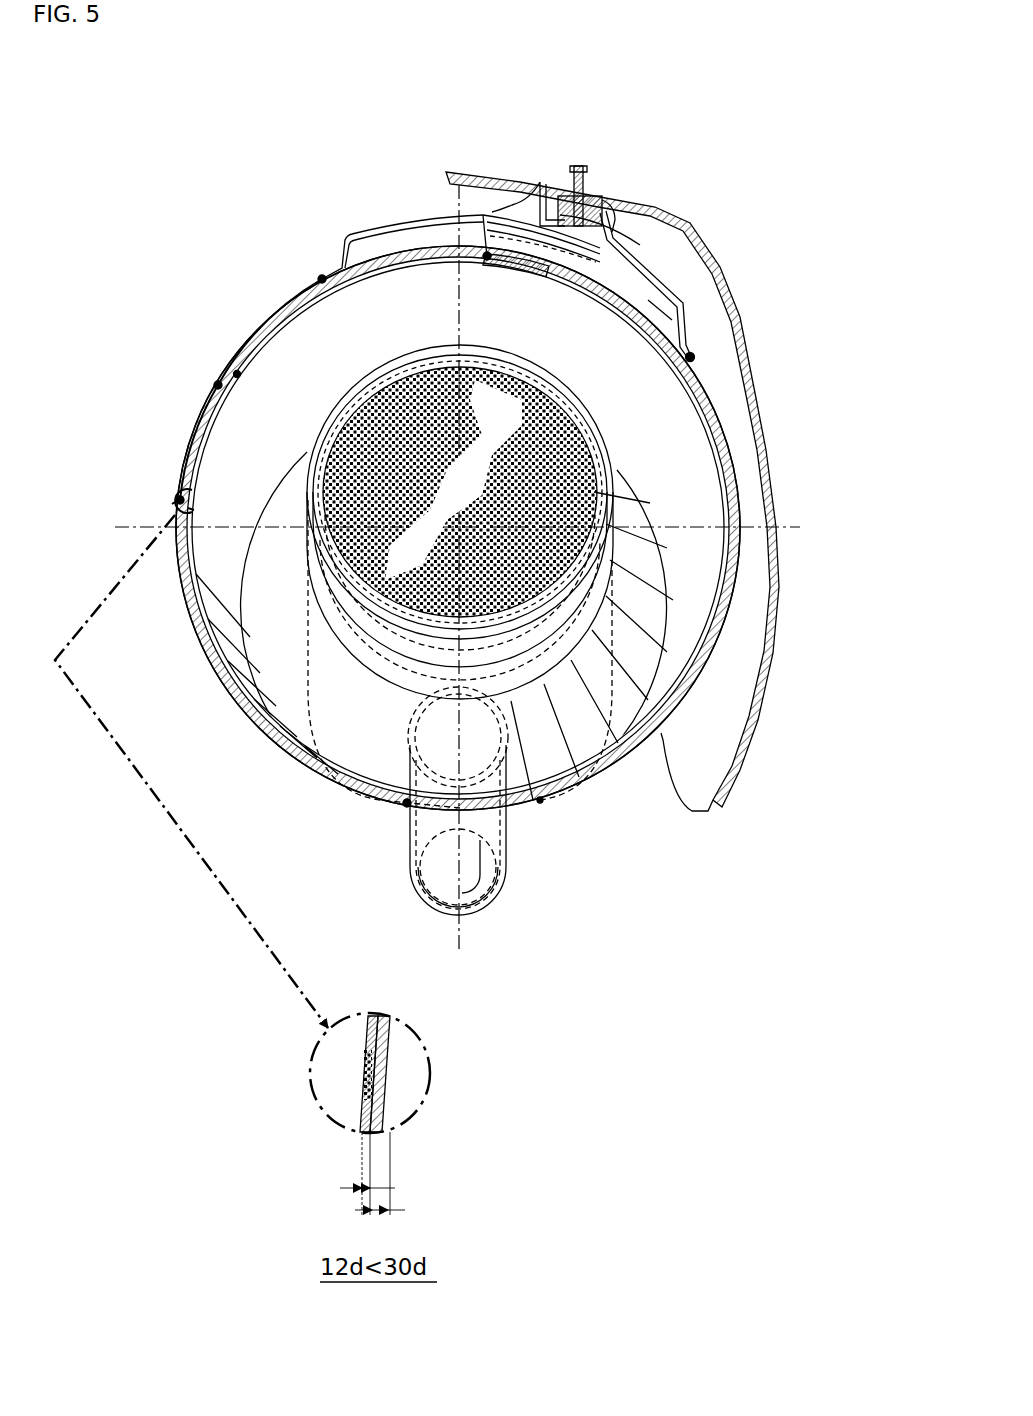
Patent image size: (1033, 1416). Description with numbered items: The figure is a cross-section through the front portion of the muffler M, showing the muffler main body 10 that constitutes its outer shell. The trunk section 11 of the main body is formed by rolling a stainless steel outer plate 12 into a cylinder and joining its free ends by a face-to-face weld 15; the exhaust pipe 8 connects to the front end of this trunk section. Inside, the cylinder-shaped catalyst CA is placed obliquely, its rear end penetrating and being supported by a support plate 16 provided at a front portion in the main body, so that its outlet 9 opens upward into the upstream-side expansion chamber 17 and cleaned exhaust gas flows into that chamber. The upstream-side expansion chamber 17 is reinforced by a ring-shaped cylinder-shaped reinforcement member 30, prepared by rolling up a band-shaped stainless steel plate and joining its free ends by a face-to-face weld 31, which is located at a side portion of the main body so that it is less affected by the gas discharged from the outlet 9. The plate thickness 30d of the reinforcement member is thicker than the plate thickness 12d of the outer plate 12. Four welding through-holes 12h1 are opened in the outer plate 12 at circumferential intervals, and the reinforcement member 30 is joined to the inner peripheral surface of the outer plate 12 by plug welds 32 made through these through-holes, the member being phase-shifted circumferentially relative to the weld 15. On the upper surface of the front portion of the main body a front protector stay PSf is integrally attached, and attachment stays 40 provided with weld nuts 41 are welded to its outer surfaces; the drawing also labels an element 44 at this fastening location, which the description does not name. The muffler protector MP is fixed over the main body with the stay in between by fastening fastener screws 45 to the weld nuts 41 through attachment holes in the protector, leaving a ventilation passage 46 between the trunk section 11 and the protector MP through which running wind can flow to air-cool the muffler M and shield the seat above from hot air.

The exhaust pipe 8 is at (480, 917).
The outlet 9 is at (500, 353).
The muffler main body 10 is at (421, 578).
The trunk section 11 is at (532, 806).
The outer plate 12 is at (300, 767).
The plate thickness 12d is at (360, 1190).
The welding through-hole 12h1 is at (372, 1068).
The face-to-face weld 15 is at (218, 385).
The support plate 16 is at (273, 667).
The upstream-side expansion chamber 17 is at (659, 437).
The cylinder-shaped reinforcement member 30 is at (263, 347).
The plate thickness 30d is at (385, 1212).
The face-to-face weld 31 is at (252, 350).
The plug weld 32 is at (487, 258).
The attachment stay 40 is at (642, 268).
The weld nut 41 is at (530, 200).
The bolt 44 is at (578, 192).
The fastener screw 45 is at (590, 200).
The ventilation passage 46 is at (723, 340).
The catalyst CA is at (540, 380).
The muffler M is at (617, 773).
The muffler protector MP is at (754, 398).
The front protector stay PSf is at (380, 230).